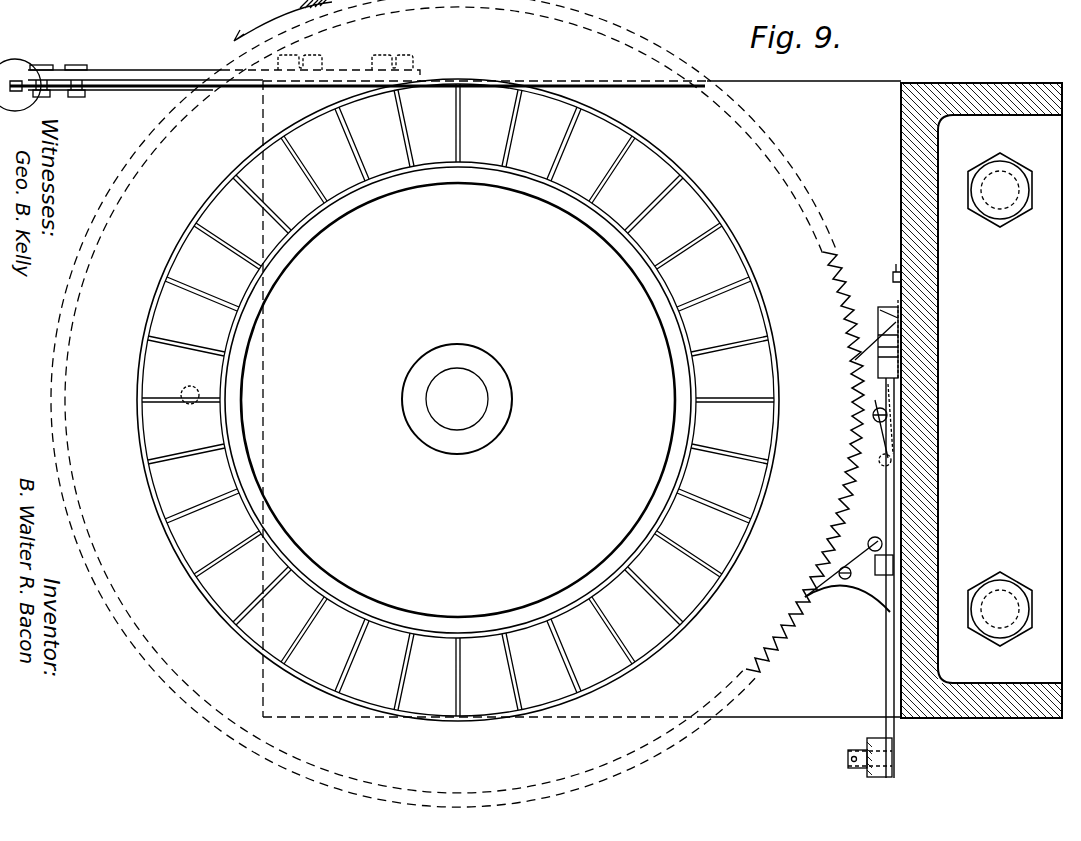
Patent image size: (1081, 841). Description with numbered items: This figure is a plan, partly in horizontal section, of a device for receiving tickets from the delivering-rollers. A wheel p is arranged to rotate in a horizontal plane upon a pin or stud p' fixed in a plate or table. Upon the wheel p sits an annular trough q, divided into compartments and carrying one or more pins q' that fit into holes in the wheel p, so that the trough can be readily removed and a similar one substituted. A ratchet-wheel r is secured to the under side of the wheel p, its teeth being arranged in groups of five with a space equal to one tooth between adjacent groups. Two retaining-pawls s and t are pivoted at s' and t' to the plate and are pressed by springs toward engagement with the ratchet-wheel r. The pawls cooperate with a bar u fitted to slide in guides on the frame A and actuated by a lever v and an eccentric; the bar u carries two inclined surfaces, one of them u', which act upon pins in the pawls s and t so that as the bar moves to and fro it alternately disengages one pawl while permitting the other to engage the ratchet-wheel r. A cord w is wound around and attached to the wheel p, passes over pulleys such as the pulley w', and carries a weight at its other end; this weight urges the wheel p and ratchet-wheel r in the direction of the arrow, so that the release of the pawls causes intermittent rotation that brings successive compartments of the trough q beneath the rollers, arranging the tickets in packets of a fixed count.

The annular trough q is at (458, 400).
The pin q' is at (188, 409).
The wheel p is at (458, 400).
The pin p' is at (457, 399).
The ratchet-wheel r is at (805, 462).
The frame A is at (981, 400).
The bar u is at (877, 578).
The inclined surface u' is at (886, 567).
The retaining-pawl t is at (875, 372).
The pivot t' is at (871, 429).
The retaining-pawl s is at (841, 569).
The pivot s' is at (846, 560).
The lever v is at (875, 776).
The cord w is at (357, 83).
The pulley w' is at (55, 92).